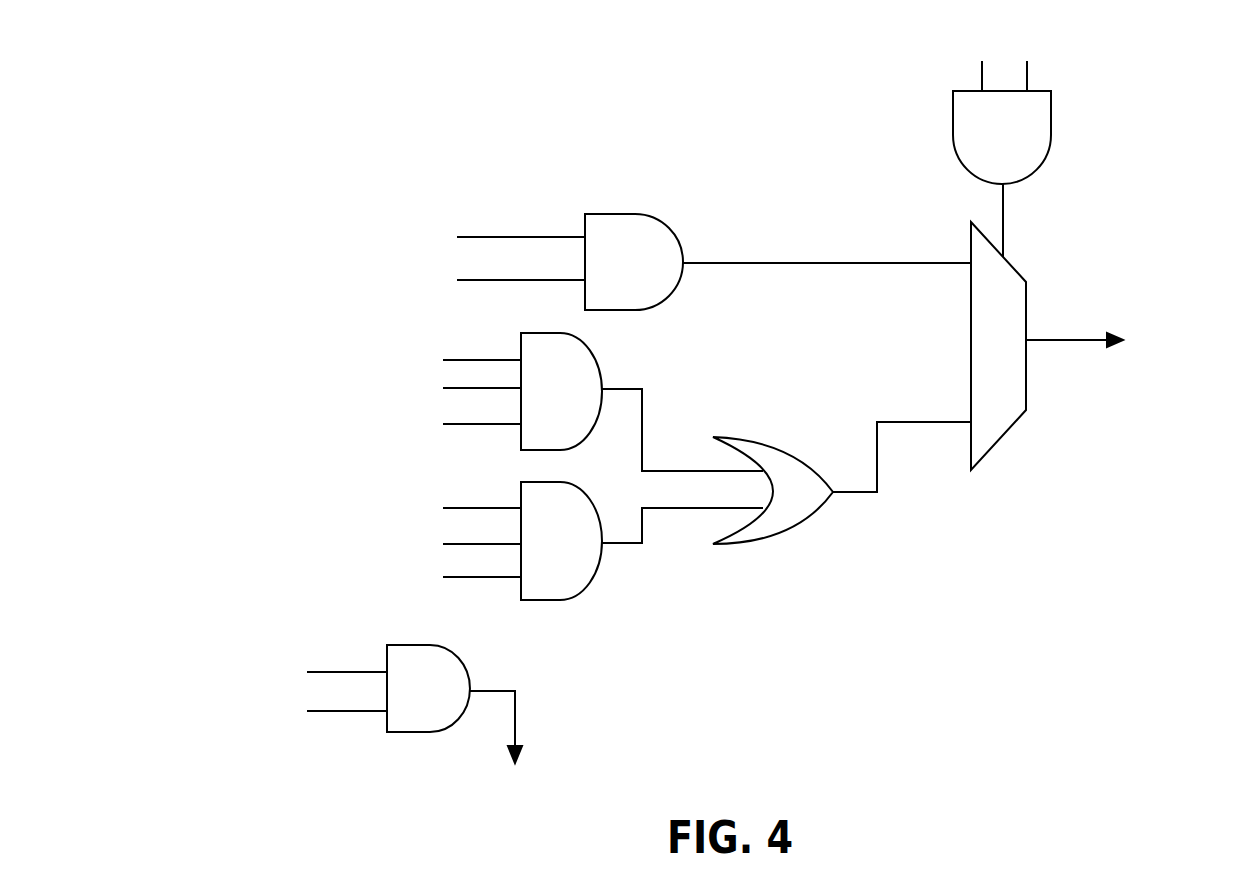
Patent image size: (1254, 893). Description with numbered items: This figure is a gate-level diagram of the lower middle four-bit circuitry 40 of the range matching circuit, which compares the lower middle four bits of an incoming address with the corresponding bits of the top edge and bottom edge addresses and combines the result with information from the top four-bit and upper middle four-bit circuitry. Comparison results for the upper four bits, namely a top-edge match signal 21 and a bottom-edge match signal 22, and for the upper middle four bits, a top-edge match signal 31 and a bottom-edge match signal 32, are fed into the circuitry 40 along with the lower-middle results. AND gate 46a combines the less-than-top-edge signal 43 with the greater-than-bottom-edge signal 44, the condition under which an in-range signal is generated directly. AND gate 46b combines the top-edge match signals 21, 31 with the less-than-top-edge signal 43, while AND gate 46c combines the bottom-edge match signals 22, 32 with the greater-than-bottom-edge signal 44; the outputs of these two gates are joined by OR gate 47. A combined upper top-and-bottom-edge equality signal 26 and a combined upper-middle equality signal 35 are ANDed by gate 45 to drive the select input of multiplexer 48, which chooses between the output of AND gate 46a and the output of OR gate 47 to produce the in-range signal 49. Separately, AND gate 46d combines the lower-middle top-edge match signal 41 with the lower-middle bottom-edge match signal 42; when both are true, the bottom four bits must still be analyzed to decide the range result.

The lower middle four-bit circuitry 40 is at (1240, 702).
The AND gate / TE1 = BE1 signal 45 is at (746, 444).
The TE3 = BE3 signal 26 is at (918, 62).
The TE2 = BE2 signal 35 is at (1094, 62).
The multiplexer 48 is at (998, 346).
The in range output 49 is at (1139, 343).
The AND gate 46a is at (778, 262).
The AND gate 46b is at (642, 402).
The AND gate 46c is at (642, 541).
The AND gate 46d is at (454, 704).
The OR gate 47 is at (842, 483).
The TEI1 signal 43 is at (467, 331).
The BEI1 signal 44 is at (476, 430).
The TE3[15:12] signal 21 is at (401, 362).
The TE2[11:8] signal 31 is at (408, 390).
The BE3[15:12] signal 22 is at (403, 510).
The BE2[11:8] signal 32 is at (409, 546).
The TE1 signal 41 is at (283, 673).
The BE1 signal 42 is at (283, 711).